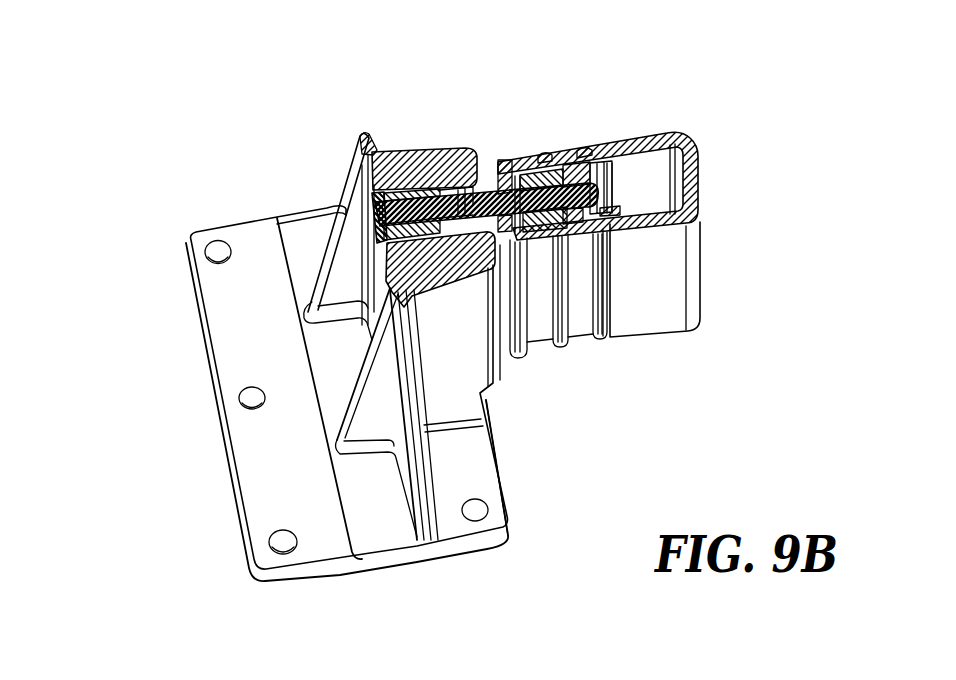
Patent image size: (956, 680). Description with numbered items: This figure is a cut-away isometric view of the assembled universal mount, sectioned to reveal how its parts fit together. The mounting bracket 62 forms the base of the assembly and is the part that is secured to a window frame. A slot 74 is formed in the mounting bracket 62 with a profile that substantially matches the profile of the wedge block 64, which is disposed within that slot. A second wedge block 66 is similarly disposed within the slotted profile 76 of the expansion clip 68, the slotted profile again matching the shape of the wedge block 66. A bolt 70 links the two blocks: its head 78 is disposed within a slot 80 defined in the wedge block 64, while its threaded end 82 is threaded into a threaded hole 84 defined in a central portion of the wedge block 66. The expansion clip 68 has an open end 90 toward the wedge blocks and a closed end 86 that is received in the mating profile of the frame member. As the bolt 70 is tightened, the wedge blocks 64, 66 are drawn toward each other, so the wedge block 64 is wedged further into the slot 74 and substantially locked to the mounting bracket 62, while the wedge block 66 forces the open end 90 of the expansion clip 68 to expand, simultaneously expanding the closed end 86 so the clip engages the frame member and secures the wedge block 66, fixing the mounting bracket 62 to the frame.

The mounting bracket 62 is at (418, 150).
The wedge block 64 is at (384, 238).
The wedge block 66 is at (620, 224).
The expansion clip 68 is at (622, 325).
The bolt 70 is at (530, 189).
The slot 74 is at (384, 198).
The slotted profile 76 is at (628, 178).
The head 78 is at (426, 262).
The slot 80 is at (346, 213).
The threaded end 82 is at (555, 170).
The threaded hole 84 is at (606, 184).
The closed end 86 is at (694, 165).
The open end 90 is at (502, 278).